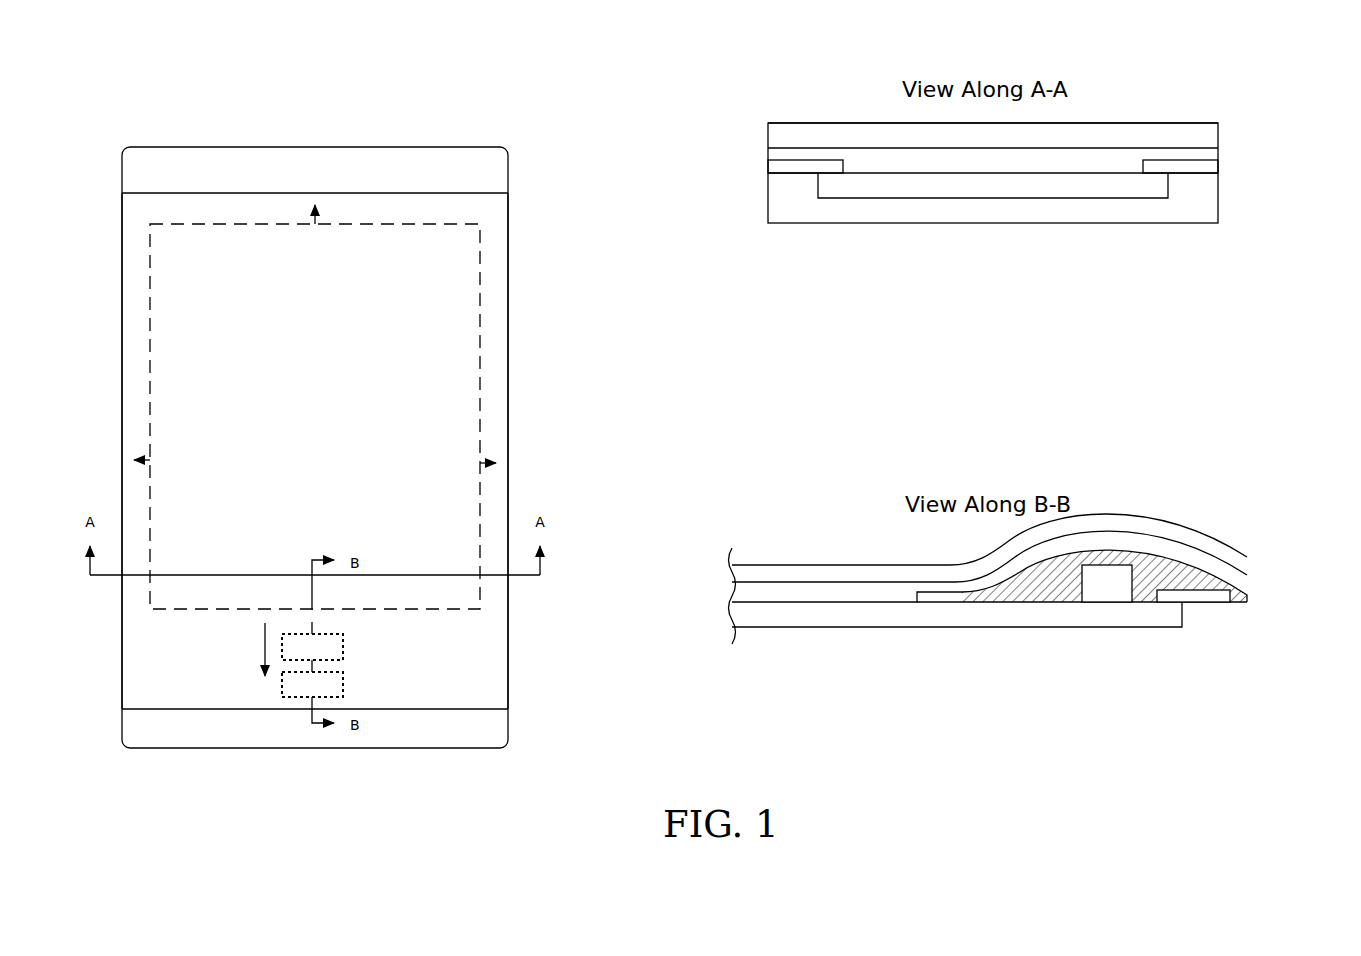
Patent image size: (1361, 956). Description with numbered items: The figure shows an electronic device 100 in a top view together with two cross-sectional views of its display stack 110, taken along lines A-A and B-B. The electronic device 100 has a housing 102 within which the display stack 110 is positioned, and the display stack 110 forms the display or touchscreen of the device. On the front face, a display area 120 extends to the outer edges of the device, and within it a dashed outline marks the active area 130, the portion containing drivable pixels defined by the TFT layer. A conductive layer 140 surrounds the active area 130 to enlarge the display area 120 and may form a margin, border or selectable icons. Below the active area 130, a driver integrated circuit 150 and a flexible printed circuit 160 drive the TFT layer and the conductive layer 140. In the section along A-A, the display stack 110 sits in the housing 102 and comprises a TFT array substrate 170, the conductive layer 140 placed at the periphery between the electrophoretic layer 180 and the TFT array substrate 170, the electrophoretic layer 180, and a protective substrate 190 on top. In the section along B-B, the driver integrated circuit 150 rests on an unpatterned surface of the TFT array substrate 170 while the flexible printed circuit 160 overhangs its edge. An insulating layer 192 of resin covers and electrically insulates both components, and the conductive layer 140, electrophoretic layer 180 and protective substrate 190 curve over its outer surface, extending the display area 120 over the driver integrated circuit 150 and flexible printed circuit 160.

The electronic device 100 is at (499, 54).
The housing 102 is at (510, 158).
The display stack 110 is at (510, 337).
The display area 120 is at (233, 184).
The active area 130 is at (480, 270).
The conductive layer 140 is at (493, 407).
The driver integrated circuit 150 is at (343, 644).
The flexible printed circuit 160 is at (343, 684).
The TFT array substrate 170 is at (848, 185).
The electrophoretic layer 180 is at (1207, 155).
The protective substrate 190 is at (1192, 138).
The insulating layer 192 is at (1157, 572).